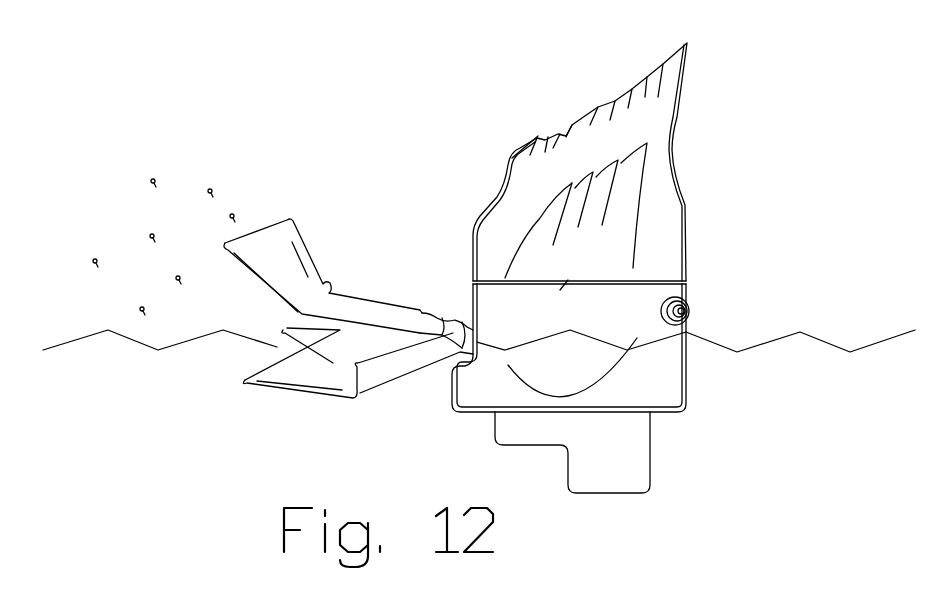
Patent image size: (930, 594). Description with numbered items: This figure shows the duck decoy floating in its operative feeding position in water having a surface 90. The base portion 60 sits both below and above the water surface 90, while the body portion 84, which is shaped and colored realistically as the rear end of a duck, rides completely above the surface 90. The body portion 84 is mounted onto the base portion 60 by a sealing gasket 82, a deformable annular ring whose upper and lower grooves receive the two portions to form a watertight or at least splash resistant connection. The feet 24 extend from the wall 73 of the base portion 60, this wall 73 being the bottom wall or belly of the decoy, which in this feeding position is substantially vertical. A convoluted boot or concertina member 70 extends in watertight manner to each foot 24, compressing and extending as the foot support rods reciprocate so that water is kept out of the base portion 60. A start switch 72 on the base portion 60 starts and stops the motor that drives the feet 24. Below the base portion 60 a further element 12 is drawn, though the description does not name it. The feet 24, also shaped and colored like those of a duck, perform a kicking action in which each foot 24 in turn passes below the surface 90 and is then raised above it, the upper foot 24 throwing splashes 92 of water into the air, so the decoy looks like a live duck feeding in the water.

The mounting bracket 12 is at (650, 462).
The foot 24 is at (308, 258).
The base portion 60 is at (687, 384).
The convoluted boot 70 is at (447, 317).
The start switch 72 is at (689, 313).
The wall 73 is at (465, 318).
The sealing gasket 82 is at (568, 281).
The body portion 84 is at (687, 215).
The water surface 90 is at (123, 340).
The splashes 92 is at (208, 183).